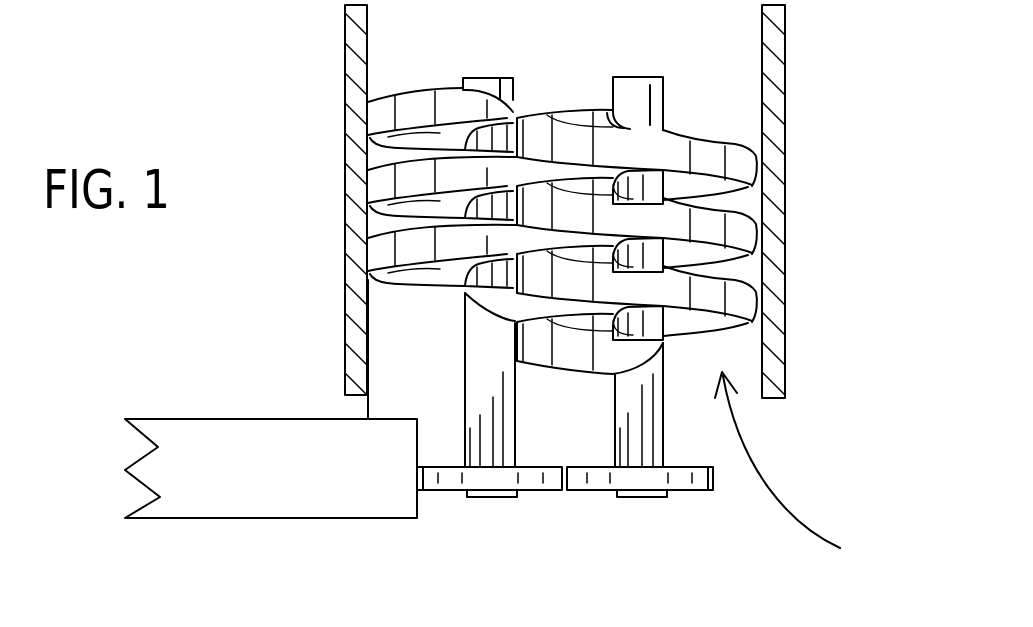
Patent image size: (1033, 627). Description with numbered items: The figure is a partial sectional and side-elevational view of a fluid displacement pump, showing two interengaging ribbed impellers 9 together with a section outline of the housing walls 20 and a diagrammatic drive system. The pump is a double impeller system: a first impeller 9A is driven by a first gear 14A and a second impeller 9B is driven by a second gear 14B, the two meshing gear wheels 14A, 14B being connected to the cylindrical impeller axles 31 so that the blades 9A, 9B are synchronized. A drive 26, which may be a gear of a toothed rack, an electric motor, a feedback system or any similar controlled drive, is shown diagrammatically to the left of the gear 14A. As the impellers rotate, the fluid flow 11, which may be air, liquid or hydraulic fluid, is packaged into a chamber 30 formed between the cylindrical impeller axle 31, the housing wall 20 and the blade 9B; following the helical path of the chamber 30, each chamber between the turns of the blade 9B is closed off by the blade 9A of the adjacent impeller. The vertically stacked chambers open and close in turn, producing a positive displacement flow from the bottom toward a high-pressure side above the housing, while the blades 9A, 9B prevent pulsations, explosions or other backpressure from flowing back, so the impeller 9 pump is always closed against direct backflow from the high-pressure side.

The impeller 9 is at (620, 233).
The first impeller 9A is at (422, 100).
The second impeller 9B is at (695, 233).
The fluid flow 11 is at (805, 471).
The first gear 14A is at (535, 485).
The second gear 14B is at (708, 492).
The housing wall 20 is at (773, 106).
The drive 26 is at (203, 498).
The chamber 30 is at (743, 277).
The cylindrical impeller axle 31 is at (633, 83).